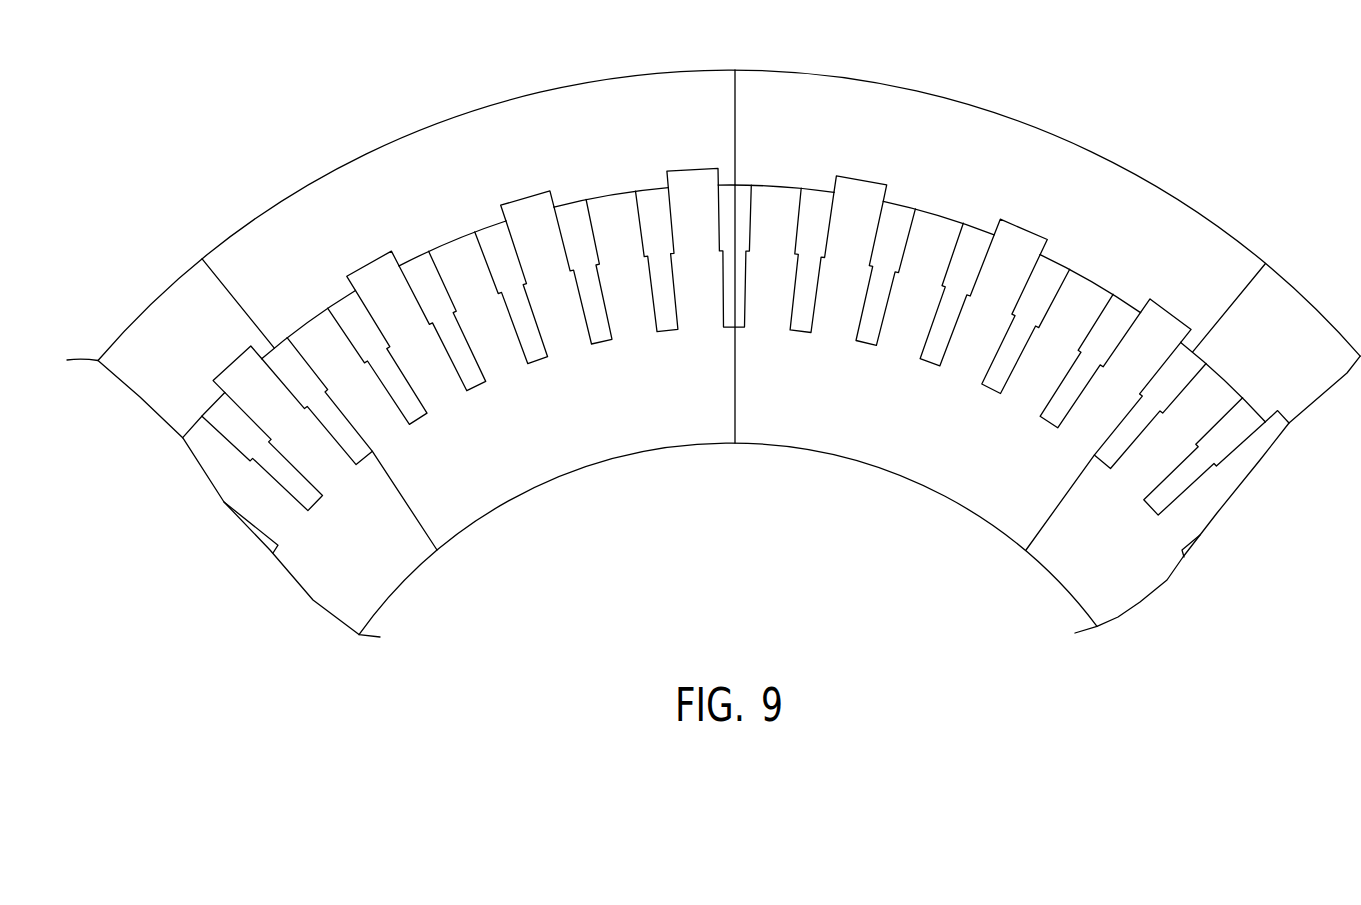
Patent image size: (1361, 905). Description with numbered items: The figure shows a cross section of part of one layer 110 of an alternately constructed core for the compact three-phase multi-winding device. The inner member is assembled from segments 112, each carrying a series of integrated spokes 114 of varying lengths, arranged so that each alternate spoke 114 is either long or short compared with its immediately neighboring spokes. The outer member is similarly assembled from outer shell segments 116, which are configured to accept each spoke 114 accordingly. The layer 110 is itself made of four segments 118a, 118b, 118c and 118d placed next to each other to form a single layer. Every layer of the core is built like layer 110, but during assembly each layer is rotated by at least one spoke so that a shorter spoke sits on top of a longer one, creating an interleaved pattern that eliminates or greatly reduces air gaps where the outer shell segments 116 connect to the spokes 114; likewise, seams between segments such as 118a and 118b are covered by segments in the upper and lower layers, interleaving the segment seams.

The layer 110 is at (160, 108).
The segments 112 is at (655, 437).
The spokes 114 is at (835, 328).
The segments 116 is at (677, 88).
The segment 118a is at (337, 558).
The segment 118b is at (498, 466).
The segment 118c is at (948, 464).
The segment 118d is at (1076, 556).